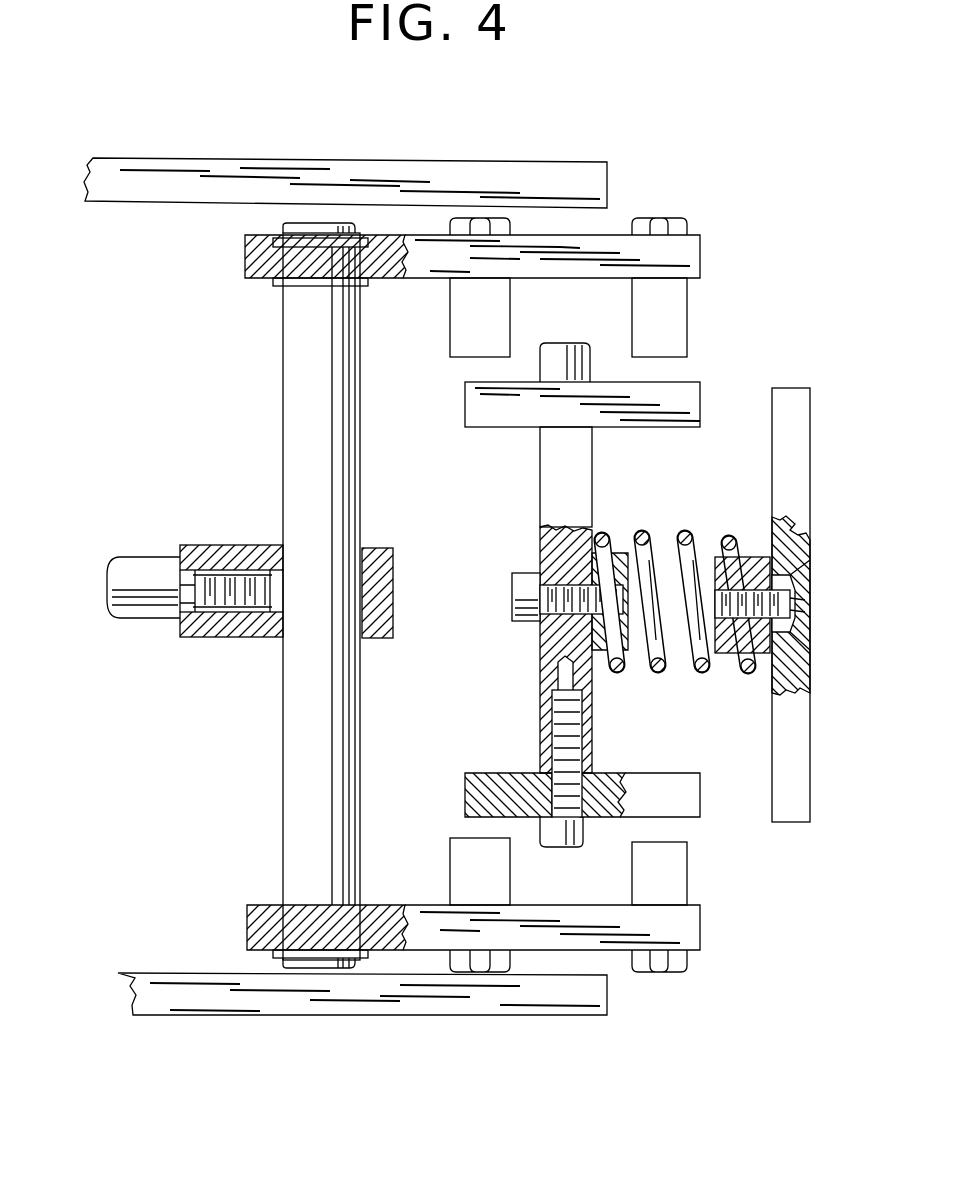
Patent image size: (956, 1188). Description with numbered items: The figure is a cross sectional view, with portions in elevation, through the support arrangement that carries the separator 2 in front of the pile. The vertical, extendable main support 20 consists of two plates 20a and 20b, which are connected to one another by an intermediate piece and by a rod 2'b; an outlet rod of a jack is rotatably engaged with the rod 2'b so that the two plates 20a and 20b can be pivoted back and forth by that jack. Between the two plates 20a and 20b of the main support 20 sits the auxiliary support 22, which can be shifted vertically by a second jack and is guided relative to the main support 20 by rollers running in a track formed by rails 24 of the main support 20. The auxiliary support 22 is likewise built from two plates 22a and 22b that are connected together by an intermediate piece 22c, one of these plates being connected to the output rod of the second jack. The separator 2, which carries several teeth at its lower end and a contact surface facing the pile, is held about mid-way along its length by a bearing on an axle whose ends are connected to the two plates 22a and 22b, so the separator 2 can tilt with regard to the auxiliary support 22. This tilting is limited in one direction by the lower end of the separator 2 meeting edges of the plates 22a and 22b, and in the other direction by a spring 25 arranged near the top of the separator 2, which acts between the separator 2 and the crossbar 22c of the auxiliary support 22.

The separator 2 is at (769, 636).
The rod 2'b is at (238, 800).
The main support 20 is at (272, 410).
The plate of the main support 20a is at (598, 245).
The plate of the main support 20b is at (598, 940).
The auxiliary support 22 is at (508, 463).
The plate of the auxiliary support 22a is at (688, 402).
The plate of the auxiliary support 22b is at (480, 773).
The intermediate piece 22c is at (556, 548).
The rails 24 is at (672, 318).
The spring 25 is at (690, 535).